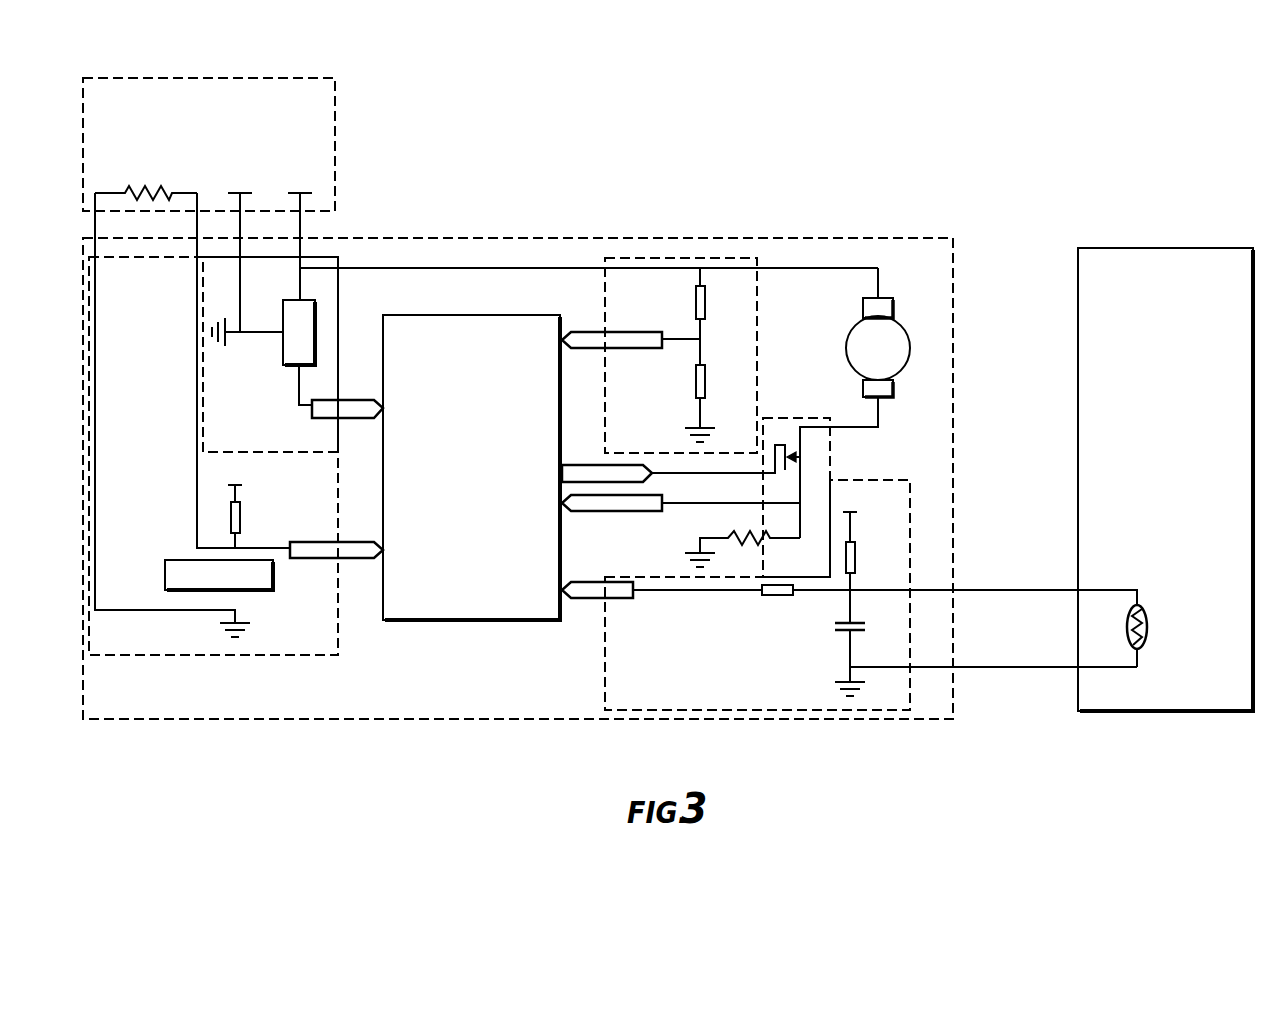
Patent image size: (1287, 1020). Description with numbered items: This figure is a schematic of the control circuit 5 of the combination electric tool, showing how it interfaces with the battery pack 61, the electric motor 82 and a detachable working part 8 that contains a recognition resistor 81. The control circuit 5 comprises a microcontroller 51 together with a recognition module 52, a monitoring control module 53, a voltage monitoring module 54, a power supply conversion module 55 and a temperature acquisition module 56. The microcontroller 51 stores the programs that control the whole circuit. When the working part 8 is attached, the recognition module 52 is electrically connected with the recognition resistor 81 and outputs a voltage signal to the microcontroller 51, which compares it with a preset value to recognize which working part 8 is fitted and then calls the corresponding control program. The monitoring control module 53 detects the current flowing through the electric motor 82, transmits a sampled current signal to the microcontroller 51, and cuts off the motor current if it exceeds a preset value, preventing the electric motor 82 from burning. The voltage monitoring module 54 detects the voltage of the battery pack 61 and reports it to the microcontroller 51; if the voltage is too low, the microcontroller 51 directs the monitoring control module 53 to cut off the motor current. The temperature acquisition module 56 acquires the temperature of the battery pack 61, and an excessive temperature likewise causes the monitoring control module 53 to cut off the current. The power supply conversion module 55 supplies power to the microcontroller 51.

The control circuit 5 is at (573, 182).
The working part 8 is at (1137, 205).
The microcontroller 51 is at (443, 605).
The recognition module 52 is at (767, 697).
The monitoring control module 53 is at (783, 428).
The voltage monitoring module 54 is at (648, 288).
The power supply conversion module 55 is at (328, 288).
The temperature acquisition module 56 is at (292, 630).
The battery pack 61 is at (231, 93).
The recognition resistor 81 is at (1143, 647).
The electric motor 82 is at (895, 335).